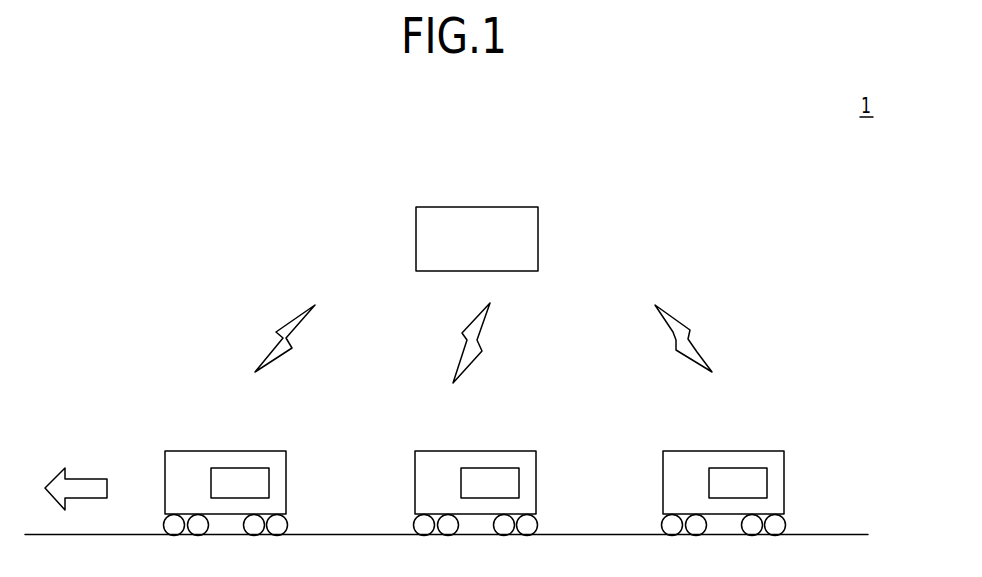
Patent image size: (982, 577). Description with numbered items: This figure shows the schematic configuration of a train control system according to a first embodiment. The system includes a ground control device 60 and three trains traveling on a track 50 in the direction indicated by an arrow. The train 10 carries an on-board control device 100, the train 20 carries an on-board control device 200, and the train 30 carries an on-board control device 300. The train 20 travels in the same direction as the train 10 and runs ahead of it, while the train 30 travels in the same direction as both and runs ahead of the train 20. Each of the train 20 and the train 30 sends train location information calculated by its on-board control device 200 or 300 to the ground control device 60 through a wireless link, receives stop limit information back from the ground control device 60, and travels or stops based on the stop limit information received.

The train 10 is at (743, 463).
The on-board control device 100 is at (766, 444).
The train 20 is at (495, 465).
The on-board control device 200 is at (518, 446).
The train 30 is at (245, 465).
The on-board control device 300 is at (268, 446).
The track 50 is at (452, 510).
The ground control device 60 is at (504, 213).